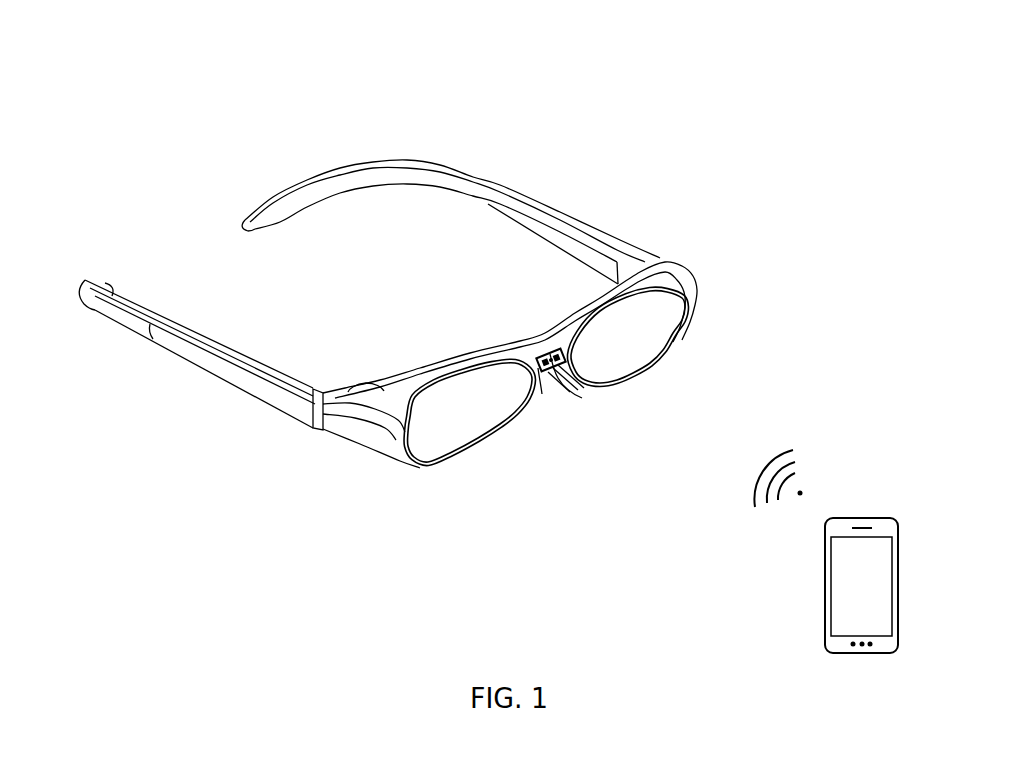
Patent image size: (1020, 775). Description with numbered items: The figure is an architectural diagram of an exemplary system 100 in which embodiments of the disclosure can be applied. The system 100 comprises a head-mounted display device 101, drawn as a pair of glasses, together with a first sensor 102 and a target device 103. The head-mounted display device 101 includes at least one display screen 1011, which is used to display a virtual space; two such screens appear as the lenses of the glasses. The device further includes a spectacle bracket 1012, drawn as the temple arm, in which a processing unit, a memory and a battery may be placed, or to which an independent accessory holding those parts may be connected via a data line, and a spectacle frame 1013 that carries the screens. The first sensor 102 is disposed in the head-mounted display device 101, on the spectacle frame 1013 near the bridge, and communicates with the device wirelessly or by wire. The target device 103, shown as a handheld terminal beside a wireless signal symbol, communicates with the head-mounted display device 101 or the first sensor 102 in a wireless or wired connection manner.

The exemplary system 100 is at (910, 56).
The head-mounted display device 101 is at (660, 262).
The display screen 1011 is at (483, 412).
The spectacle bracket 1012 is at (257, 387).
The spectacle frame 1013 is at (381, 408).
The first sensor 102 is at (541, 352).
The target device 103 is at (874, 517).